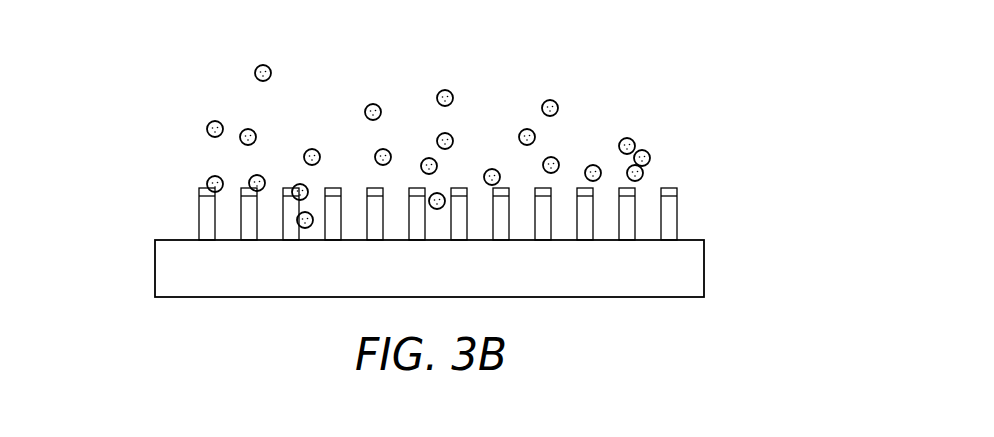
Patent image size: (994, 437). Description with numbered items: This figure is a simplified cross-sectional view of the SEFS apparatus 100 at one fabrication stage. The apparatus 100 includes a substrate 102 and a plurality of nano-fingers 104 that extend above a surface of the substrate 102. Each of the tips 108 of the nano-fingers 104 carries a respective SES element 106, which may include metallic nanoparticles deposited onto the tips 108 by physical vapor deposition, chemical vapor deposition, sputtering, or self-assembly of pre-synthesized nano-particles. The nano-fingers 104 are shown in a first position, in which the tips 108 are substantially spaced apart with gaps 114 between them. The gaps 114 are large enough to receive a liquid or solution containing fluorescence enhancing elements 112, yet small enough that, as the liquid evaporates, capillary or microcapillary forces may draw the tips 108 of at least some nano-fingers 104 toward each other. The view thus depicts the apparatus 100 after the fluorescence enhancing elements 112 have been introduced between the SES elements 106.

The SEFS apparatus 100 is at (104, 158).
The substrate 102 is at (704, 274).
The nano-fingers 104 is at (199, 218).
The SES elements 106 is at (410, 188).
The tips 108 is at (335, 197).
The fluorescence enhancing elements 112 is at (256, 78).
The gaps 114 is at (352, 175).